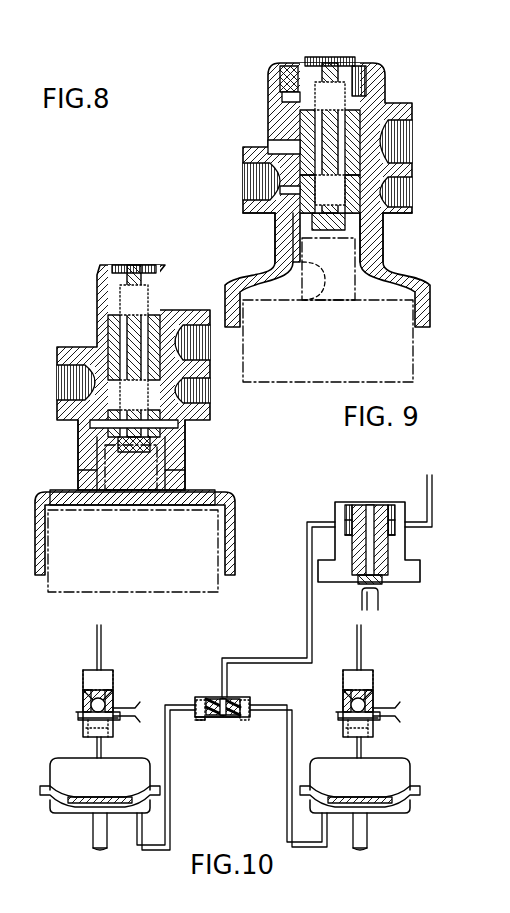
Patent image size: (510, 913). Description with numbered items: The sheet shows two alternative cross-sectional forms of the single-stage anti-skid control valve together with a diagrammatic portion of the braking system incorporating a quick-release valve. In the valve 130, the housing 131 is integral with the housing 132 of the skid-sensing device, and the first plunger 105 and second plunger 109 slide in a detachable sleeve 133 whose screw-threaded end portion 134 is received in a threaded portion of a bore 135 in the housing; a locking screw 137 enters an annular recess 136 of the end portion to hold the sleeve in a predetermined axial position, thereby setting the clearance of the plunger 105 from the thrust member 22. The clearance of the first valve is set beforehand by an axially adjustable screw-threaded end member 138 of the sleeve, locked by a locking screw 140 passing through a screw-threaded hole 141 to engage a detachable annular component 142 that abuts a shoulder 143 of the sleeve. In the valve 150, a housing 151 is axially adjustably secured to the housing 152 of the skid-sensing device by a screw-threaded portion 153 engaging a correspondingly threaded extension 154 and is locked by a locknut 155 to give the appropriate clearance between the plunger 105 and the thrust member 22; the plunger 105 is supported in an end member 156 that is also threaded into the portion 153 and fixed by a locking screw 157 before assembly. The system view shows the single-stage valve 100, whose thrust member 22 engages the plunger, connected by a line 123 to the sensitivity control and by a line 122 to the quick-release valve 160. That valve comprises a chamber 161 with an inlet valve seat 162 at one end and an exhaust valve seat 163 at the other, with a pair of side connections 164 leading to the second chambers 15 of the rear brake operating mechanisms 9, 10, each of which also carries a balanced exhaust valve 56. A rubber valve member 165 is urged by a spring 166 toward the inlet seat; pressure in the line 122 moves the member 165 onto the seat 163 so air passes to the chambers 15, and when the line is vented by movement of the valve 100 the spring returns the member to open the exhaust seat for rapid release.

In FIG. 9, the valve 130 is at (390, 92).
In FIG. 9, the housing 131 is at (395, 172).
In FIG. 9, the housing 132 is at (400, 268).
In FIG. 9, the detachable sleeve 133 is at (345, 140).
In FIG. 9, the screw-threaded end portion 134 is at (300, 66).
In FIG. 9, the bore 135 is at (292, 92).
In FIG. 9, the annular recess 136 is at (285, 70).
In FIG. 9, the locking screw 137 is at (360, 68).
In FIG. 9, the screw-threaded end member 138 is at (305, 193).
In FIG. 9, the locking screw 140 is at (383, 228).
In FIG. 9, the screw-threaded hole 141 is at (275, 228).
In FIG. 9, the detachable annular component 142 is at (305, 182).
In FIG. 9, the shoulder 143 is at (300, 147).
In FIG. 9, the second plunger 109 is at (355, 118).
In FIG. 9, the first plunger 105 is at (340, 215).
In FIG. 8, the first plunger 105 is at (110, 418).
In FIG. 9, the thrust member 22 is at (312, 298).
In FIG. 8, the thrust member 22 is at (95, 470).
In FIG. 10, the thrust member 22 is at (378, 598).
In FIG. 8, the valve 150 is at (97, 300).
In FIG. 8, the housing 151 is at (200, 412).
In FIG. 8, the housing 152 is at (230, 537).
In FIG. 8, the screw-threaded portion 153 is at (185, 470).
In FIG. 8, the screw-threaded extension 154 is at (185, 440).
In FIG. 8, the locknut 155 is at (105, 488).
In FIG. 8, the end member 156 is at (210, 372).
In FIG. 8, the locking screw 157 is at (195, 428).
In FIG. 10, the single-stage valve 100 is at (385, 552).
In FIG. 10, the line 122 is at (307, 600).
In FIG. 10, the line 123 is at (428, 490).
In FIG. 10, the quick-release valve 160 is at (246, 698).
In FIG. 10, the chamber 161 is at (250, 706).
In FIG. 10, the inlet valve seat 162 is at (200, 698).
In FIG. 10, the exhaust valve seat 163 is at (228, 718).
In FIG. 10, the side connections 164 is at (175, 710).
In FIG. 10, the rubber valve member 165 is at (228, 700).
In FIG. 10, the spring 166 is at (195, 715).
In FIG. 10, the balanced exhaust valve 56 is at (82, 690).
In FIG. 10, the rear brake operating mechanism 9 is at (57, 803).
In FIG. 10, the rear brake operating mechanism 10 is at (395, 805).
In FIG. 10, the second working chamber 15 is at (86, 814).